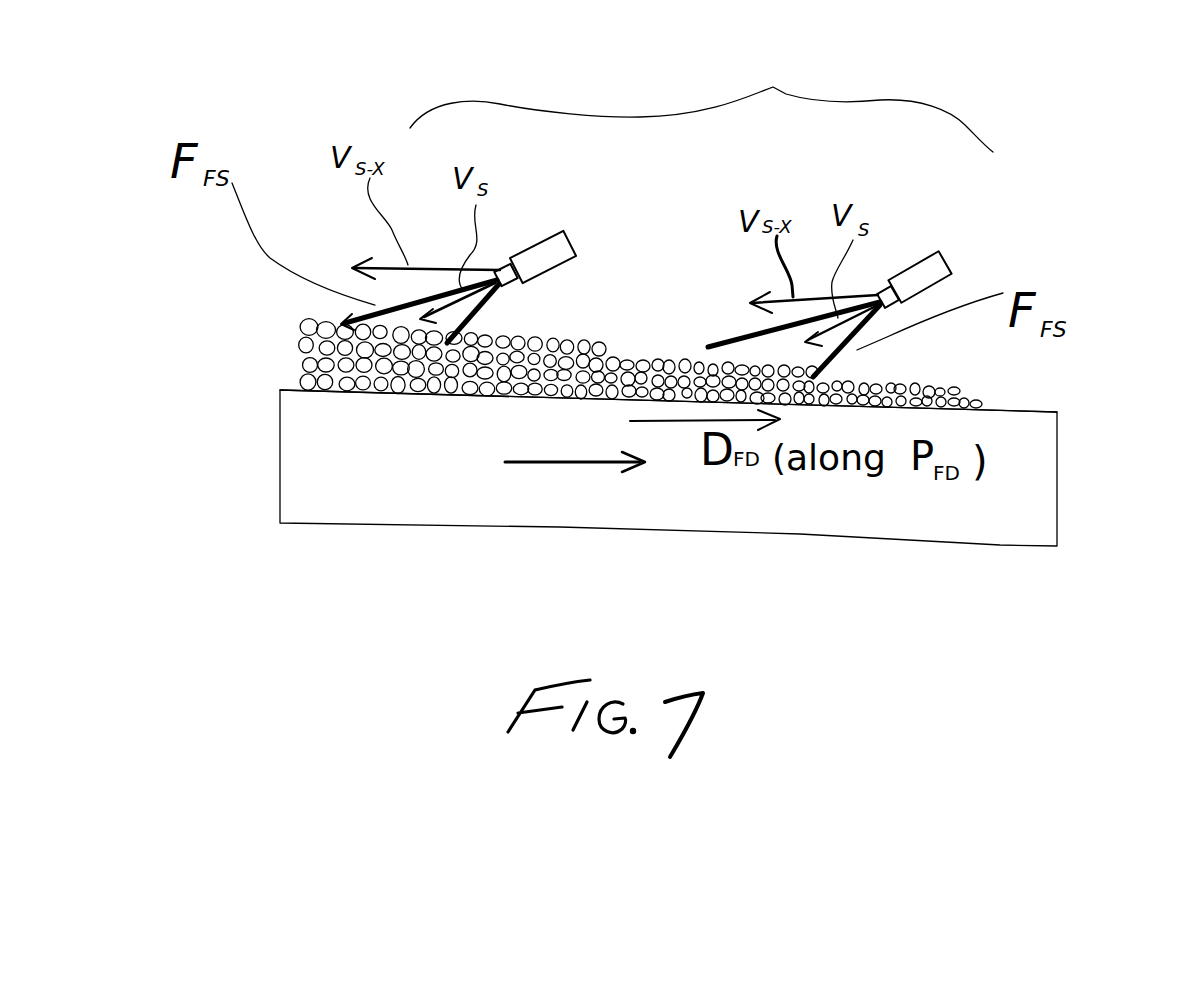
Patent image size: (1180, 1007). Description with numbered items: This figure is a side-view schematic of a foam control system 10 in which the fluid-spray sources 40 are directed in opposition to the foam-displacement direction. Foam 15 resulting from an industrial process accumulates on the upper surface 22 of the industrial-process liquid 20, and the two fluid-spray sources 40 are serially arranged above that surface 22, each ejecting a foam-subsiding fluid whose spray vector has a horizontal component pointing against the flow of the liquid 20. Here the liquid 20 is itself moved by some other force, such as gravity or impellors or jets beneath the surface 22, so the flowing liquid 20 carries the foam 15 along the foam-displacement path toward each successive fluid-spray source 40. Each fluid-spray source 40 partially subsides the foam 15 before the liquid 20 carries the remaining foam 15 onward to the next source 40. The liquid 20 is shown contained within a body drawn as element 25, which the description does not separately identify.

The foam control system 10 is at (701, 94).
The foam 15 is at (600, 318).
The industrial-process liquid 20 is at (600, 509).
The upper surface 22 is at (1037, 412).
The substrate 25 is at (933, 545).
The fluid-spray source 40 is at (547, 254).